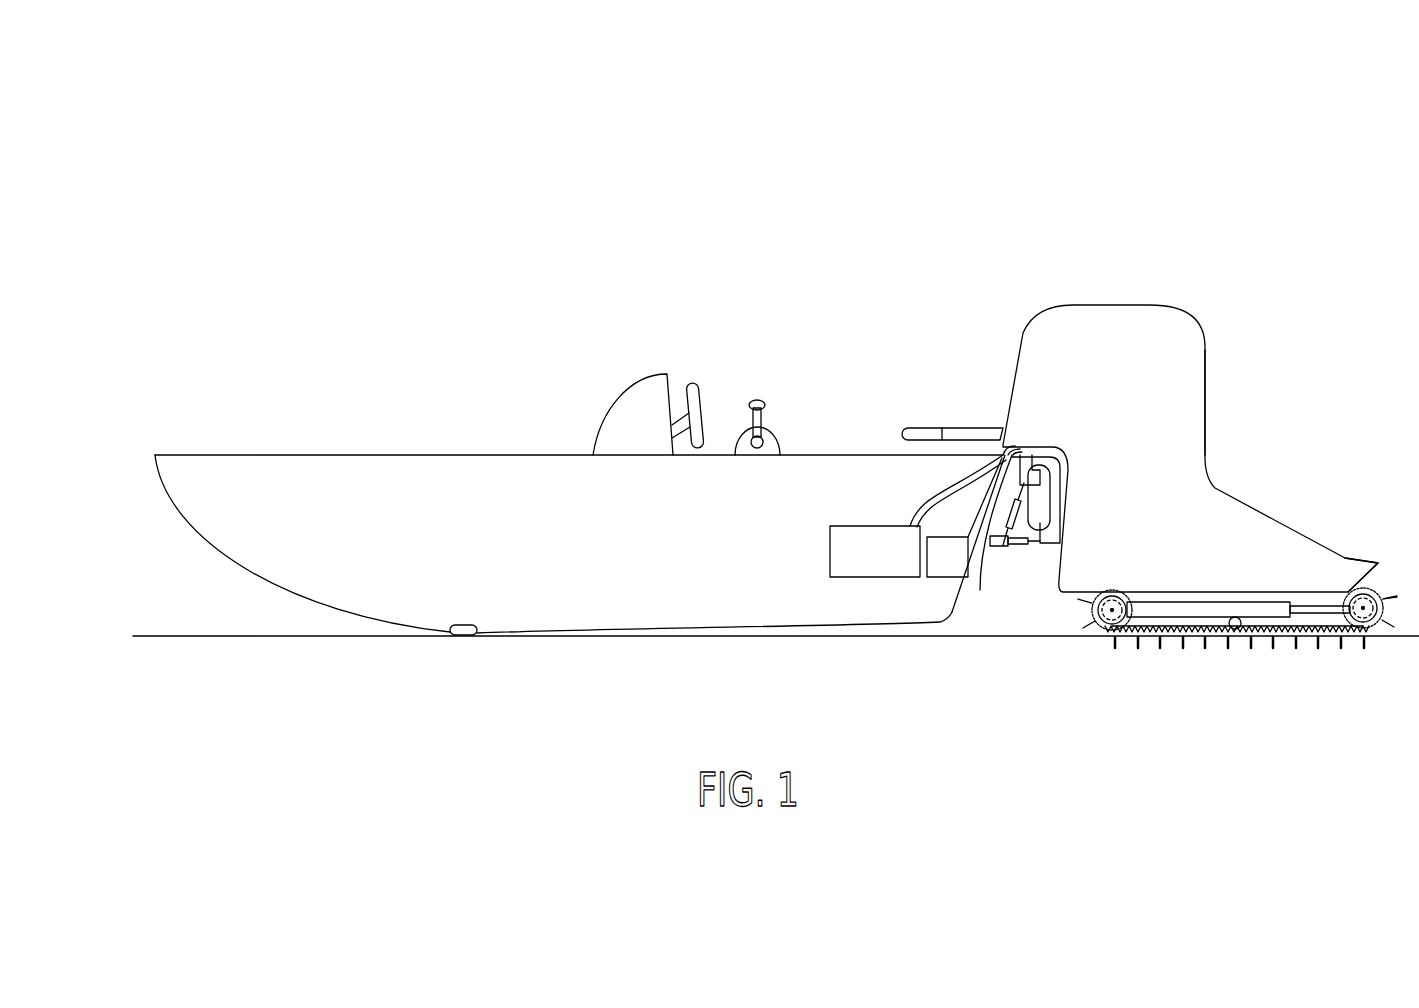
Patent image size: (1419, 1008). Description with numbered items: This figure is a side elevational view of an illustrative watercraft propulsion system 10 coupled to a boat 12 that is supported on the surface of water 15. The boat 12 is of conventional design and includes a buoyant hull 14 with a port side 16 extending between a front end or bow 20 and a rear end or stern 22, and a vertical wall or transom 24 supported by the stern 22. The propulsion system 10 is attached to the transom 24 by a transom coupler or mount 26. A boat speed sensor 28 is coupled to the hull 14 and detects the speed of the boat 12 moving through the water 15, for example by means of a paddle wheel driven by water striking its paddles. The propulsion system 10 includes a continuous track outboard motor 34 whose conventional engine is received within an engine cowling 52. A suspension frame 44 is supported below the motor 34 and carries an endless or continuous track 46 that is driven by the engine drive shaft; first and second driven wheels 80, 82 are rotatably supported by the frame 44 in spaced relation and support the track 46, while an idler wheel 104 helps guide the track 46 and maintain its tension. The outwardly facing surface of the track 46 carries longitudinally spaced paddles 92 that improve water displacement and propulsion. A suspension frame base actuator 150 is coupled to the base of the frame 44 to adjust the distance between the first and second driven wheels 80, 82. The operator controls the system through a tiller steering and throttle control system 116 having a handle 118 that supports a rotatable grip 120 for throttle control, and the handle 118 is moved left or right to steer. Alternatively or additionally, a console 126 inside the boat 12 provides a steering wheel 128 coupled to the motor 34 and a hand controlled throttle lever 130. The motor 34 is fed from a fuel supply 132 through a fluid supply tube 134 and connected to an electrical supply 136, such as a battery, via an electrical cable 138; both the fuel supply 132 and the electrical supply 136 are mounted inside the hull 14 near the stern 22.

The watercraft propulsion system 10 is at (1213, 218).
The boat 12 is at (404, 210).
The buoyant hull 14 is at (225, 547).
The water 15 is at (993, 636).
The port side 16 is at (567, 617).
The bow 20 is at (152, 455).
The stern 22 is at (980, 590).
The transom 24 is at (952, 612).
The transom coupler or mount 26 is at (1031, 571).
The boat speed sensor 28 is at (465, 635).
The continuous track outboard motor 34 is at (1118, 297).
The suspension frame 44 is at (1298, 620).
The continuous track 46 is at (1330, 633).
The engine cowling 52 is at (1206, 368).
The first driven wheel 80 is at (1108, 632).
The second driven wheel 82 is at (1373, 636).
The paddles 92 is at (1392, 597).
The idler wheel 104 is at (1236, 630).
The tiller steering and throttle control system 116 is at (932, 357).
The handle 118 is at (968, 429).
The rotatable grip 120 is at (915, 428).
The console 126 is at (757, 305).
The steering wheel 128 is at (695, 381).
The throttle lever 130 is at (760, 401).
The fuel supply 132 is at (867, 577).
The fluid supply tube 134 is at (943, 488).
The electrical supply 136 is at (953, 578).
The electrical cable 138 is at (967, 528).
The suspension frame base actuator 150 is at (1197, 602).